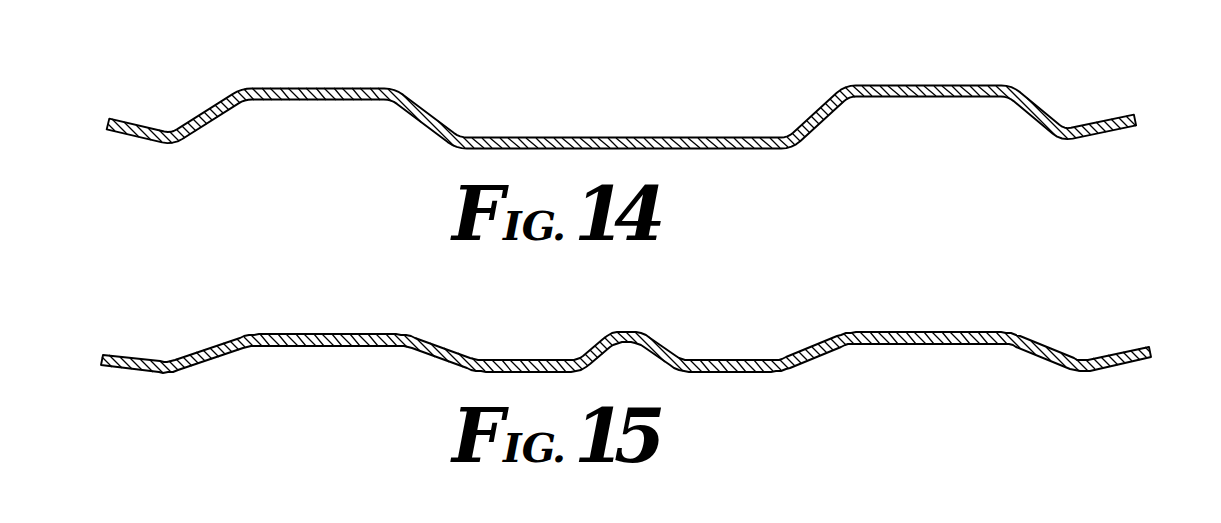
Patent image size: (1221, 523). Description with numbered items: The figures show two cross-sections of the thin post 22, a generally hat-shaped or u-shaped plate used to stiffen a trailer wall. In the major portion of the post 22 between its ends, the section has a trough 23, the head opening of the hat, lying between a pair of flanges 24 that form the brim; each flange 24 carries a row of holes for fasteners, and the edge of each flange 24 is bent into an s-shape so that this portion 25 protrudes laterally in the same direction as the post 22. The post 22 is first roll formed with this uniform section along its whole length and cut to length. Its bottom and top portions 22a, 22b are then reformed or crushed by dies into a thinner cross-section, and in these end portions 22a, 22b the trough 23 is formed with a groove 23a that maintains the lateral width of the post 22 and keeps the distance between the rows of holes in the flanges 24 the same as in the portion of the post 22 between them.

In FIG. 14, the thin post 22 is at (727, 72).
In FIG. 15, the bottom portion 22a is at (626, 314).
In FIG. 15, the top portion 22b is at (760, 283).
In FIG. 14, the trough 23 is at (527, 137).
In FIG. 15, the trough 23 is at (512, 353).
In FIG. 15, the groove 23a is at (623, 343).
In FIG. 14, the flange 24 is at (300, 88).
In FIG. 15, the flange 24 is at (308, 334).
In FIG. 14, the s-shaped flange portion 25 is at (140, 126).